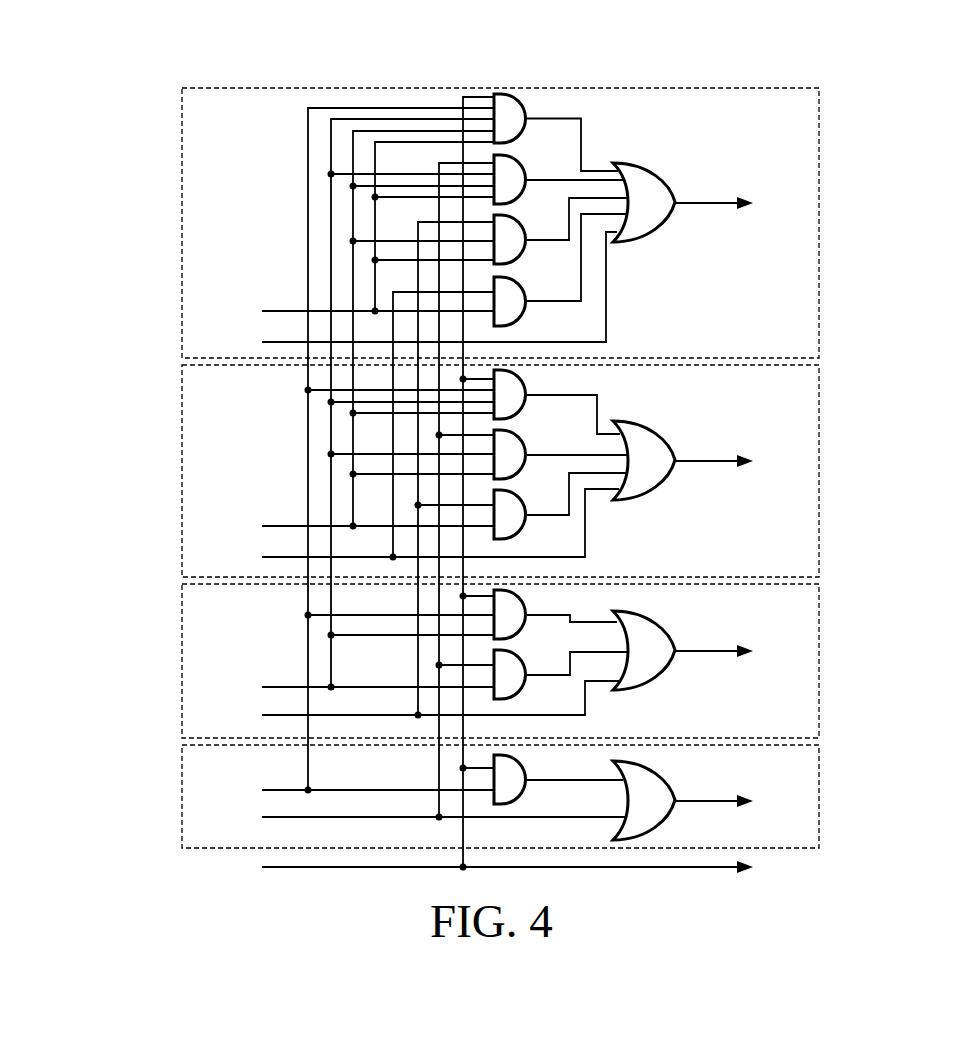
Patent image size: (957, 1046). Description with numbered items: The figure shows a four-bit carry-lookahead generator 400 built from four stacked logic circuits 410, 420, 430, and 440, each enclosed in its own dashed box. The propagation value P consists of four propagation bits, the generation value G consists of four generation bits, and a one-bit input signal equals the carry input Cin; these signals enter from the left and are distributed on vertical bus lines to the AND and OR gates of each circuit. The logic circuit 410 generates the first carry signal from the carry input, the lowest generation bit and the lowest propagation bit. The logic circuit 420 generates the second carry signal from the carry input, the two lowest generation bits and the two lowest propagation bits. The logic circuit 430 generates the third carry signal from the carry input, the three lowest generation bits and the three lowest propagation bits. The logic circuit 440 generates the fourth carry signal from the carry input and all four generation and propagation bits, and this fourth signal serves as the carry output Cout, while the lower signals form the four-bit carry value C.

The carry-lookahead generator 400 is at (111, 90).
The logic circuit 410 is at (820, 795).
The logic circuit 420 is at (820, 660).
The logic circuit 430 is at (820, 469).
The logic circuit 440 is at (820, 223).